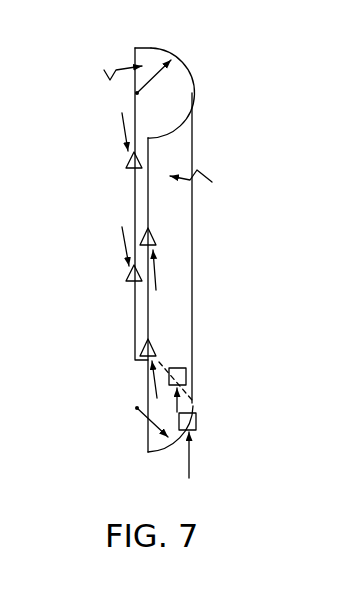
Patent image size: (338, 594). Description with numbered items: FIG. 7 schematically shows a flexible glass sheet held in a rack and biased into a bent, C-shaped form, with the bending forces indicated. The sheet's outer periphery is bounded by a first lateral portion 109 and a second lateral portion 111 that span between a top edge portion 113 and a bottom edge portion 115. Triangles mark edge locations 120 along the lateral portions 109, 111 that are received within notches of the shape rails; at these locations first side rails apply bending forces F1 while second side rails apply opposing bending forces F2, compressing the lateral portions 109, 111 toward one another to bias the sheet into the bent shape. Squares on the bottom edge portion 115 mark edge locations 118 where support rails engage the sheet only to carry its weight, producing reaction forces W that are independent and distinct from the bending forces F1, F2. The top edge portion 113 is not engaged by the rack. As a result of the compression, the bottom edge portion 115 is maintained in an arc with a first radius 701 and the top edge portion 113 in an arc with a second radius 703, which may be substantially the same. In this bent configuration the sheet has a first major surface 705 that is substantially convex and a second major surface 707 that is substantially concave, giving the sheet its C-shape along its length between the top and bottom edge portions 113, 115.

The first lateral portion 109 is at (134, 55).
The second lateral portion 111 is at (147, 313).
The top edge portion 113 is at (159, 49).
The bottom edge portion 115 is at (158, 453).
The edge locations 118 is at (198, 422).
The edge locations 120 is at (155, 236).
The first radius 701 is at (137, 408).
The second radius 703 is at (163, 80).
The first major surface 705 is at (212, 182).
The second major surface 707 is at (104, 70).
The bending forces F1 is at (157, 272).
The bending forces F2 is at (125, 129).
The reaction forces W is at (189, 411).